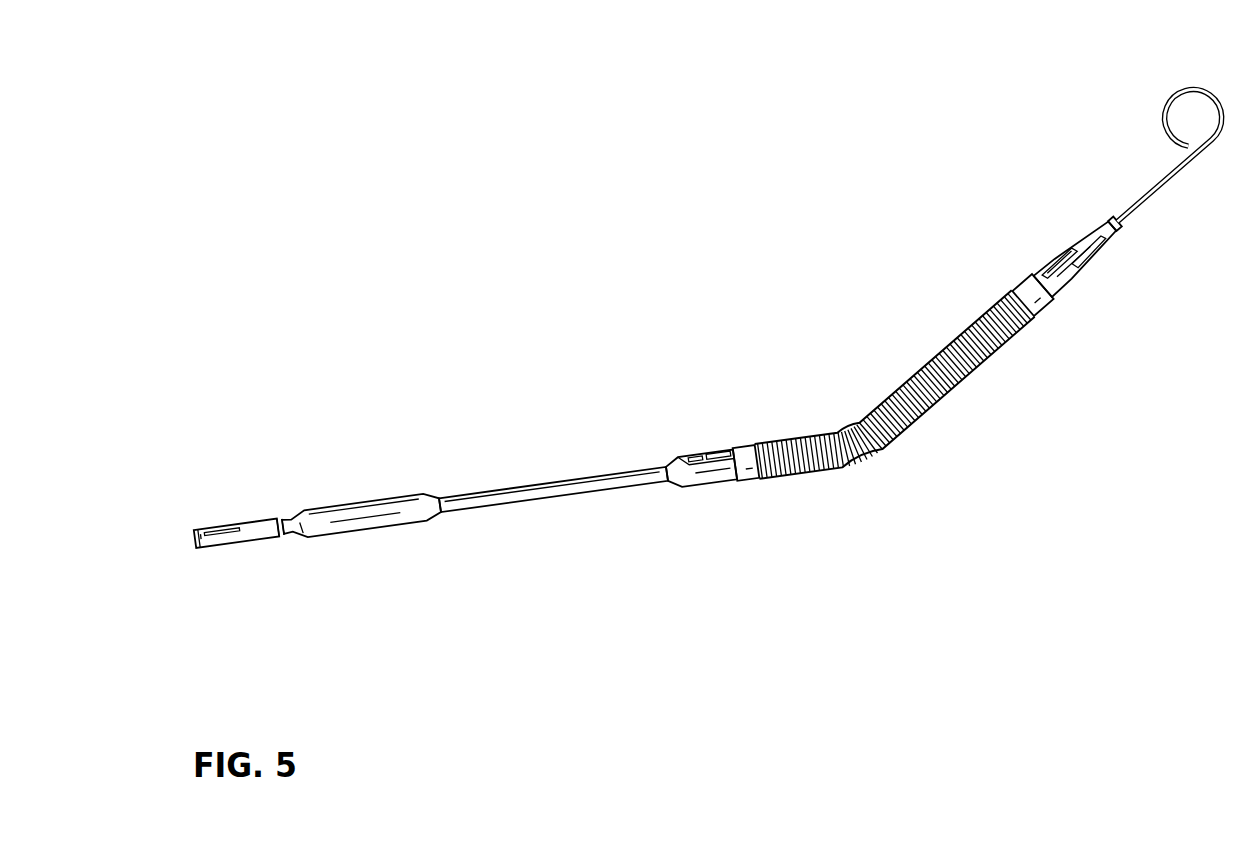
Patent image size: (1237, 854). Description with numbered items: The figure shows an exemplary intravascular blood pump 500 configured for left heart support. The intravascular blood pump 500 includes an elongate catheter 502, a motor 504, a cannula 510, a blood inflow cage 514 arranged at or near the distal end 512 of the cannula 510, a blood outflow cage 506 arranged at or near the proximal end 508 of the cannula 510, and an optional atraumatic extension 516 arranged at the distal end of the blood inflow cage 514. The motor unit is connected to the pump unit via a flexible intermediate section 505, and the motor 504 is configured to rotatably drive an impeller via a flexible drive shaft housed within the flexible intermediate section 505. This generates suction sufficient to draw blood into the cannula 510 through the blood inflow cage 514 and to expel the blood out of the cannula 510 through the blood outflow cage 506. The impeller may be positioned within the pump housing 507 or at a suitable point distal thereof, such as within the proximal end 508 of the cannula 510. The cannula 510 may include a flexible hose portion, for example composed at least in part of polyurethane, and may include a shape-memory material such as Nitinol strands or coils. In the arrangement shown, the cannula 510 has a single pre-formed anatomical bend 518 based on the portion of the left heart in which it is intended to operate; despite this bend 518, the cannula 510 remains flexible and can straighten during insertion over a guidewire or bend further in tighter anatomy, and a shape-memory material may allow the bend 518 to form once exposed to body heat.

The intravascular blood pump 500 is at (307, 619).
The elongate catheter 502 is at (234, 522).
The motor 504 is at (365, 498).
The flexible intermediate section 505 is at (545, 482).
The blood outflow cage 506 is at (690, 450).
The pump housing 507 is at (717, 482).
The proximal end of the cannula 508 is at (740, 445).
The cannula 510 is at (907, 386).
The distal end of the cannula 512 is at (1028, 288).
The blood inflow cage 514 is at (1060, 254).
The atraumatic extension 516 is at (1155, 180).
The pre-formed anatomical bend 518 is at (862, 466).